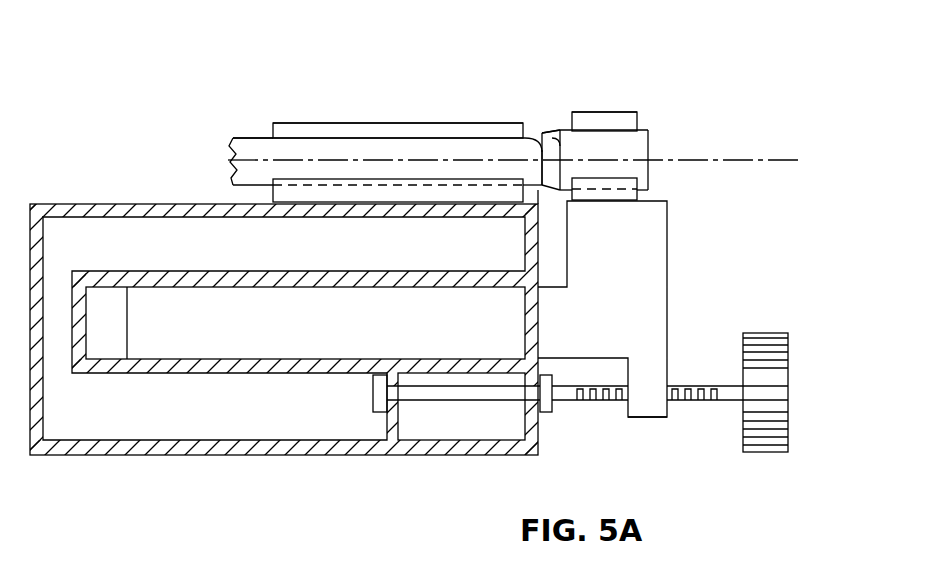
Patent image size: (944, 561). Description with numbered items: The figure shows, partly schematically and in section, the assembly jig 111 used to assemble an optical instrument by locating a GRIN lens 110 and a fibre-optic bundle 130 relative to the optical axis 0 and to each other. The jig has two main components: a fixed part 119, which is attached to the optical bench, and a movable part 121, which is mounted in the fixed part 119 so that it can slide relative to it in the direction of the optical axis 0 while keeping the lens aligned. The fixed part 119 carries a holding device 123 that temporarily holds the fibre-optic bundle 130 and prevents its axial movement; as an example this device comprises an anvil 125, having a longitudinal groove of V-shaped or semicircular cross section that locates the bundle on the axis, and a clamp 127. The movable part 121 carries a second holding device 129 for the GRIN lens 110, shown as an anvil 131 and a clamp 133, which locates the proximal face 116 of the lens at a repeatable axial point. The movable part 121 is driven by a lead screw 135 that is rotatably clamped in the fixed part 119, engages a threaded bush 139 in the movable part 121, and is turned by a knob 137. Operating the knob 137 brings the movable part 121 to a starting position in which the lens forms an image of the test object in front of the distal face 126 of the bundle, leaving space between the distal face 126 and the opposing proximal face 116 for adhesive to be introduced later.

The optical axis 0 is at (782, 158).
The GRIN lens 110 is at (644, 130).
The assembly jig 111 is at (272, 471).
The proximal face 116 is at (551, 128).
The fixed part 119 is at (427, 456).
The movable part 121 is at (667, 252).
The holding device 123 is at (412, 103).
The anvil 125 is at (273, 198).
The distal face 126 is at (530, 133).
The clamp 127 is at (352, 123).
The holding device 129 is at (644, 92).
The fibre-optic bundle 130 is at (253, 137).
The anvil 131 is at (638, 192).
The clamp 133 is at (590, 112).
The lead screw 135 is at (592, 402).
The knob 137 is at (763, 333).
The threaded bush 139 is at (648, 418).